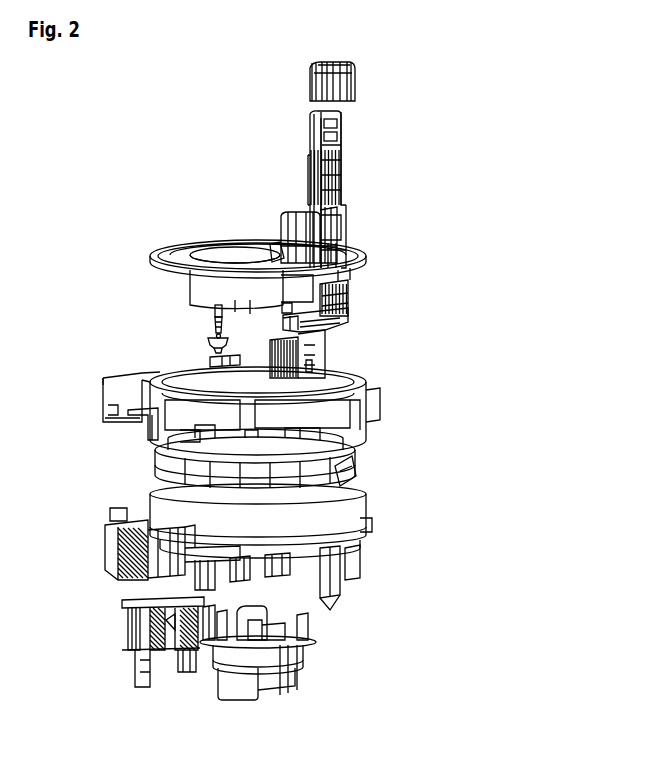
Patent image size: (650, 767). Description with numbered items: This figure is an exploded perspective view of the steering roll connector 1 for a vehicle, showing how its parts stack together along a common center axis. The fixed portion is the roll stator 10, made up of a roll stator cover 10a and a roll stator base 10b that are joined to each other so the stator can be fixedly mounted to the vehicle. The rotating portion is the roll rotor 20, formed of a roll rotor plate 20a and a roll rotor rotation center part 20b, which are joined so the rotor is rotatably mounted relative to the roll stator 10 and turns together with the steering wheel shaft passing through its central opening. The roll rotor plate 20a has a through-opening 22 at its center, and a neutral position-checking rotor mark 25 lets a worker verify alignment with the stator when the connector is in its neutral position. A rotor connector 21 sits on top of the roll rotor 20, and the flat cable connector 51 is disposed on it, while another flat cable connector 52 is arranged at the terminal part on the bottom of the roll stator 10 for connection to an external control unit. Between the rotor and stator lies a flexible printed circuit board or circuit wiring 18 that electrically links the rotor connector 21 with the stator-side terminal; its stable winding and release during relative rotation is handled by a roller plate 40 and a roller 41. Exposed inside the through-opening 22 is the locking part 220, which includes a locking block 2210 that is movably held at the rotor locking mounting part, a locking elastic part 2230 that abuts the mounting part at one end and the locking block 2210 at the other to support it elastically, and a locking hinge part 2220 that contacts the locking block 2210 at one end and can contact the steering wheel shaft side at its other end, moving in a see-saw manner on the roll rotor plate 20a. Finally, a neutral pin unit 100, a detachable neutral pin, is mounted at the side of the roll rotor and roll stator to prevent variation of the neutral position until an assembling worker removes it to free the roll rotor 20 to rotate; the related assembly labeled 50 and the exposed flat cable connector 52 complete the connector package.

The steering roll connector 1 is at (189, 177).
The neutral pin unit 100 is at (344, 138).
The roll stator 10 is at (64, 393).
The roll stator cover 10a is at (110, 393).
The roll stator base 10b is at (112, 572).
The circuit wiring 18 is at (352, 510).
The roll rotor 20 is at (428, 612).
The roll rotor plate 20a is at (367, 256).
The roll rotor rotation center part 20b is at (300, 652).
The rotor connector 21 is at (278, 235).
The through-opening 22 is at (247, 239).
The neutral position-checking rotor mark 25 is at (275, 236).
The locking part 220 is at (150, 310).
The locking block 2210 is at (206, 340).
The locking hinge part 2220 is at (205, 358).
The locking elastic part 2230 is at (212, 311).
The roller plate 40 is at (149, 490).
The roller 41 is at (360, 478).
The circuit board unit 50 is at (403, 307).
The flat cable connector 51 is at (348, 320).
The flat cable connector 52 is at (104, 633).